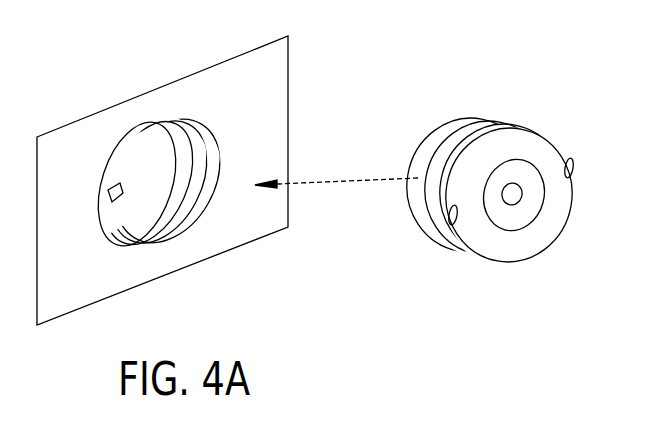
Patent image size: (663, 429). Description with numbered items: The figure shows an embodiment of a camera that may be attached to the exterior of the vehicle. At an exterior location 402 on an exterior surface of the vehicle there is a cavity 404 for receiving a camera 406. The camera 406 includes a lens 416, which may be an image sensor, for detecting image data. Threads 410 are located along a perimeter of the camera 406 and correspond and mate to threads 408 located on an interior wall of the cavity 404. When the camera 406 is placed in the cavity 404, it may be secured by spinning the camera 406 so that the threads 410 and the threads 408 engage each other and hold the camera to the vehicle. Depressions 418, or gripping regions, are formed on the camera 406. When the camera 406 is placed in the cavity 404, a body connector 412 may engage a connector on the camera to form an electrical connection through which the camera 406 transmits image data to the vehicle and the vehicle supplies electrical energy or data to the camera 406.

The exterior location 402 is at (273, 64).
The cavity 404 is at (179, 168).
The camera 406 is at (547, 138).
The threads 408 is at (203, 163).
The threads 410 is at (462, 127).
The body connector 412 is at (113, 201).
The lens 416 is at (535, 207).
The depressions 418 is at (573, 165).